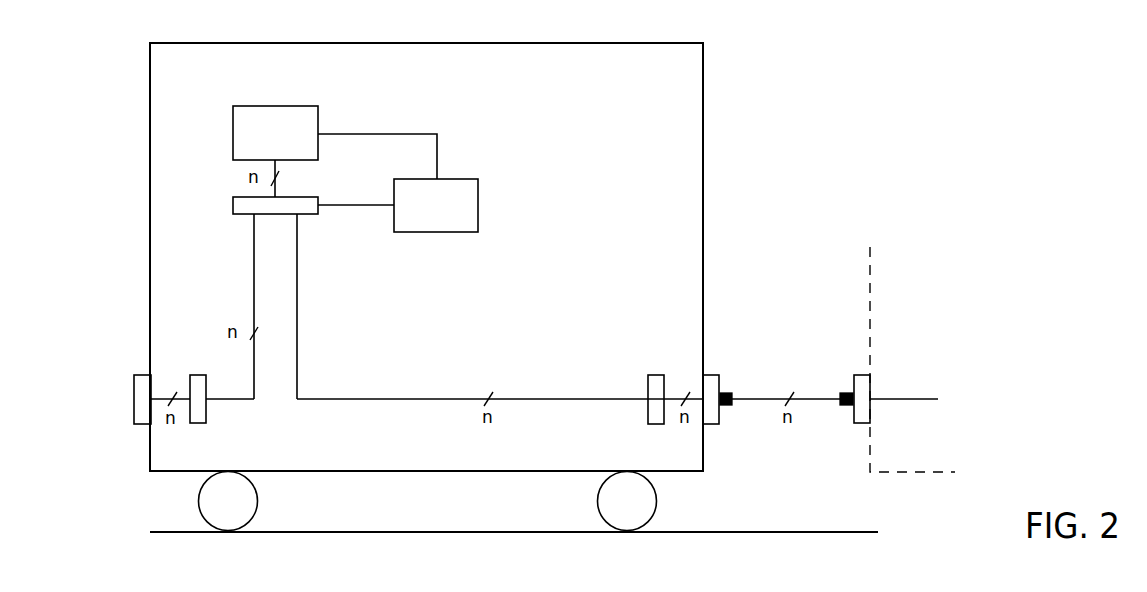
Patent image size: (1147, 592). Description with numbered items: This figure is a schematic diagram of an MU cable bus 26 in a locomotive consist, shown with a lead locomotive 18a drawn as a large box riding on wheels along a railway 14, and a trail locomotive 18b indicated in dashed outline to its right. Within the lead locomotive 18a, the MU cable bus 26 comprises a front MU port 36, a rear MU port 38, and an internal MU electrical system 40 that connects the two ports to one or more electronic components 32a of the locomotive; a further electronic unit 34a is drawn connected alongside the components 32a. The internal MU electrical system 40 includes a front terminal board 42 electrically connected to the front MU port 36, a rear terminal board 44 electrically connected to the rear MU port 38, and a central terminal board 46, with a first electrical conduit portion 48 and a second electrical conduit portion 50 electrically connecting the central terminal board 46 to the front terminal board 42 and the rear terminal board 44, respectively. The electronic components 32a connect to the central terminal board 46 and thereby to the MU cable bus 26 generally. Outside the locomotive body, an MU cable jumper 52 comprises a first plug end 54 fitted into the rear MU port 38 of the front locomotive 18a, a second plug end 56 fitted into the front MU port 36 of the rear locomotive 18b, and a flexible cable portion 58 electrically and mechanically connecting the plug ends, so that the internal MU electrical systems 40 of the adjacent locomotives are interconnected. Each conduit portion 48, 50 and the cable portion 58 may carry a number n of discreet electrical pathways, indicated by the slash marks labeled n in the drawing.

The railway 14 is at (797, 531).
The lead locomotive 18a is at (703, 107).
The trail locomotive 18b is at (871, 272).
The MU cable bus 26 is at (168, 352).
The electronic component 32a is at (233, 133).
The electronic unit 34a is at (478, 205).
The front MU port 36 is at (134, 400).
The rear MU port 38 is at (712, 375).
The internal MU electrical system 40 is at (545, 348).
The front terminal board 42 is at (199, 375).
The rear terminal board 44 is at (656, 375).
The central terminal board 46 is at (233, 206).
The first electrical conduit portion 48 is at (254, 285).
The second electrical conduit portion 50 is at (297, 290).
The MU cable jumper 52 is at (778, 367).
The first plug end 54 is at (727, 406).
The second plug end 56 is at (845, 406).
The flexible cable portion 58 is at (775, 399).